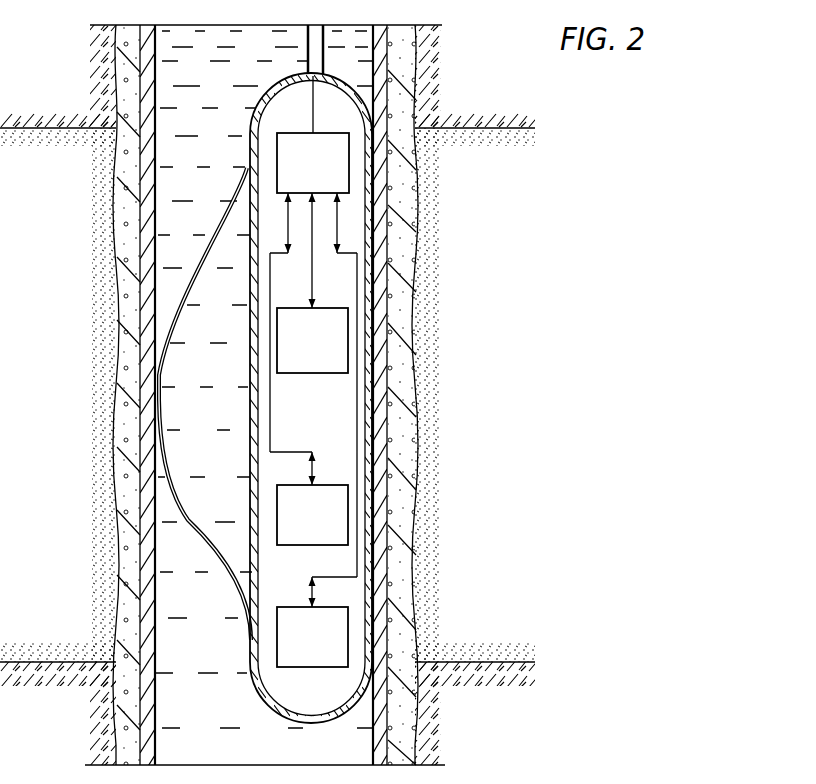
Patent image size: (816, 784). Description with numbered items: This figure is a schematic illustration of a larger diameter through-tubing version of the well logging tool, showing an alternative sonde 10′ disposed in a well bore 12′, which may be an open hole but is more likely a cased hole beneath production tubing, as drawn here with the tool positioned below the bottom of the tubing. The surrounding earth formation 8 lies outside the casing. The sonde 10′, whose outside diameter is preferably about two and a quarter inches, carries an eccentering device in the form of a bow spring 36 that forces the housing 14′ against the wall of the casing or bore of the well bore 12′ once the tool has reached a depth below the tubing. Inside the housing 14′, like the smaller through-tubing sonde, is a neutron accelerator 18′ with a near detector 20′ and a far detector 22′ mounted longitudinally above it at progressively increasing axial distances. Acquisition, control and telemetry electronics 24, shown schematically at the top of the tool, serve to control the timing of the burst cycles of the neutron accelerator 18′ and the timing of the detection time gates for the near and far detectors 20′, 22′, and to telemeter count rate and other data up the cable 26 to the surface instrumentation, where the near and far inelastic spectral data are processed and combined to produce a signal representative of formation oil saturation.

The earth formation 8 is at (478, 225).
The sonde 10′ is at (374, 390).
The well bore 12′ is at (195, 78).
The housing 14′ is at (257, 685).
The neutron accelerator 18′ is at (348, 627).
The near detector 20′ is at (348, 511).
The far detector 22′ is at (348, 344).
The acquisition, control and telemetry electronics 24 is at (321, 177).
The cable 26 is at (314, 50).
The bow spring 36 is at (185, 287).